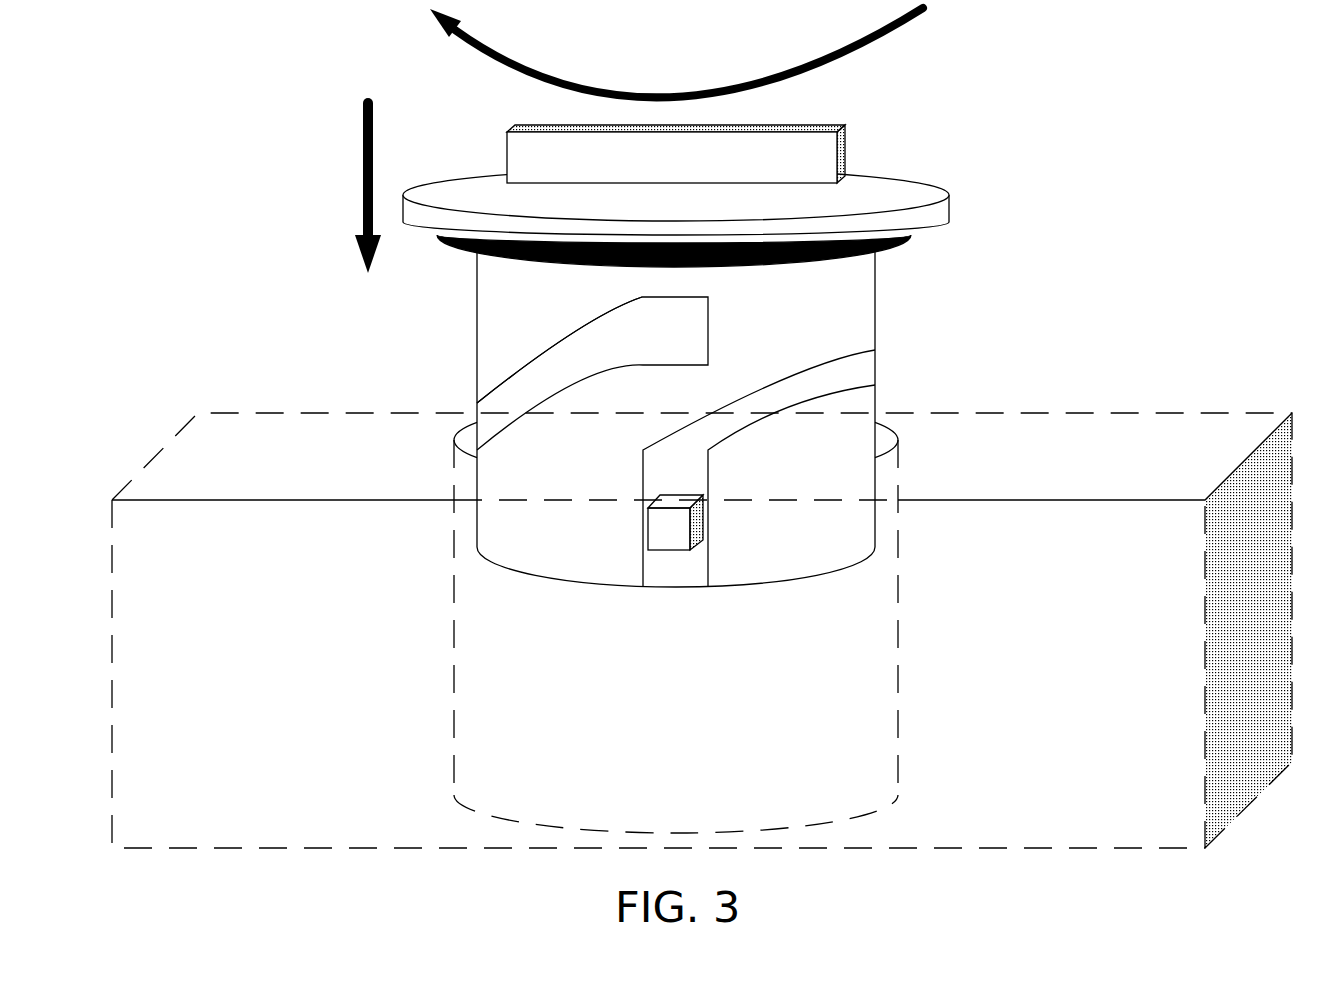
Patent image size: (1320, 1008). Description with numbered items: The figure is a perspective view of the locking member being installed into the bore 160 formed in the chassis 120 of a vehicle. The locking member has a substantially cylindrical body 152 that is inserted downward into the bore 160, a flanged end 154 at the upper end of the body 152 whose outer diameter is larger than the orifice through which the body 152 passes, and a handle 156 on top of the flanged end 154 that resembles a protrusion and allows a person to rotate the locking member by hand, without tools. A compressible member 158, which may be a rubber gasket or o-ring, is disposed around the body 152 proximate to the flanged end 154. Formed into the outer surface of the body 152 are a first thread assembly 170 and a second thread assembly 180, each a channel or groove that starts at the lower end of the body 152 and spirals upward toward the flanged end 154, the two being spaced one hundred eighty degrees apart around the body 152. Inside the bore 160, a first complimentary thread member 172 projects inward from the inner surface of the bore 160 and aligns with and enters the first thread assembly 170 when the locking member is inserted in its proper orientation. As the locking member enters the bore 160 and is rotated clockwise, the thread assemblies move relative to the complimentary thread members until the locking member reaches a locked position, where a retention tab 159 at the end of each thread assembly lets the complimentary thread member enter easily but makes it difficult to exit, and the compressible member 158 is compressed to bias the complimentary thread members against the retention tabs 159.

The chassis 120 is at (1197, 427).
The body 152 is at (857, 308).
The flanged end 154 is at (935, 212).
The handle 156 is at (822, 148).
The compressible member 158 is at (912, 245).
The retention tab 159 is at (632, 352).
The bore 160 is at (898, 793).
The first thread assembly 170 is at (853, 377).
The first complimentary thread member 172 is at (678, 530).
The second thread assembly 180 is at (550, 375).